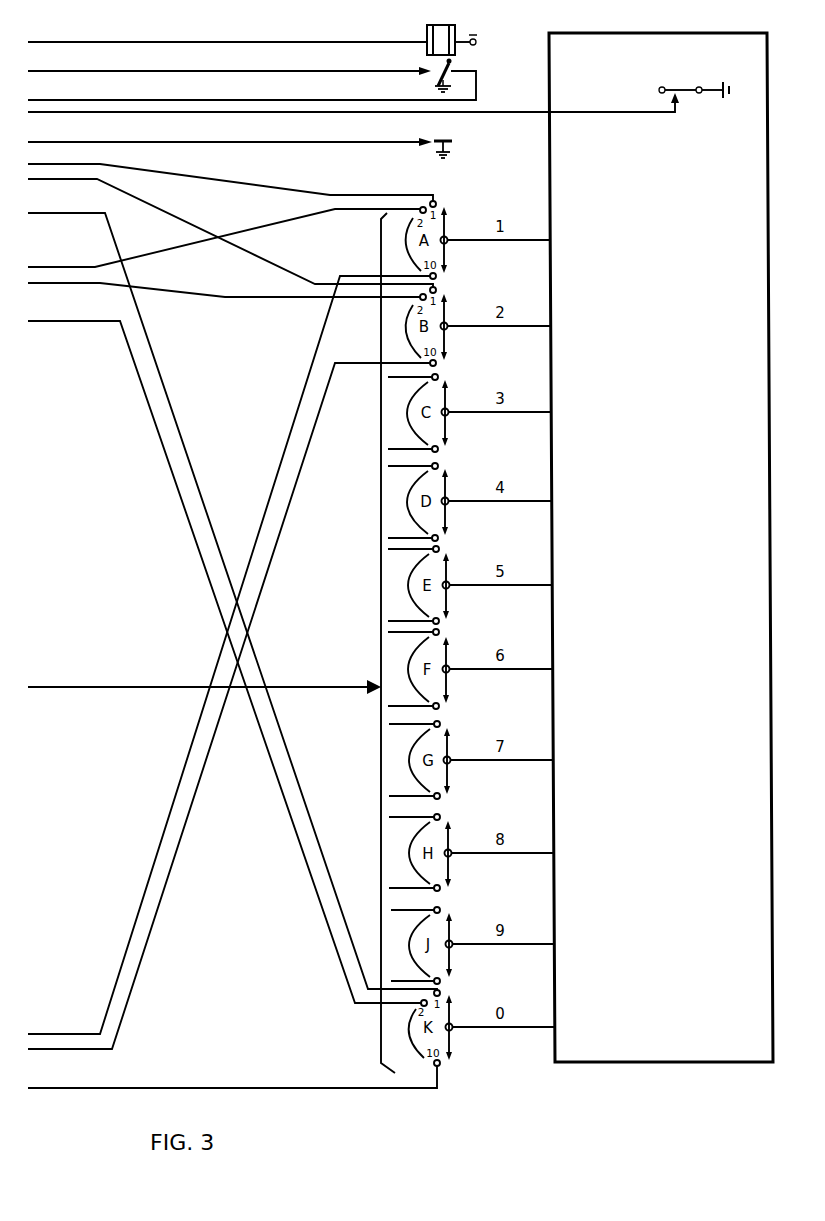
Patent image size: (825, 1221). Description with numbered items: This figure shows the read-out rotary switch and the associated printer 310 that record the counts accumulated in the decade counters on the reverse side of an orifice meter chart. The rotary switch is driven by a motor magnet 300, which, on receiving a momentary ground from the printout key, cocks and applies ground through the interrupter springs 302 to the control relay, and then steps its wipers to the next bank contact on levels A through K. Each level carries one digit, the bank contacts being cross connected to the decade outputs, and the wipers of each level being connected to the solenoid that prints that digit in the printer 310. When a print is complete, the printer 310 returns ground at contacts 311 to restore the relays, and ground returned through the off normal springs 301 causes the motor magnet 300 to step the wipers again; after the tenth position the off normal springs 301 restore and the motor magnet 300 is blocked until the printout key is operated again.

The motor magnet 300 is at (428, 33).
The off normal springs 301 is at (427, 72).
The interrupter springs 302 is at (452, 139).
The printer 310 is at (661, 547).
The contacts 311 is at (658, 89).